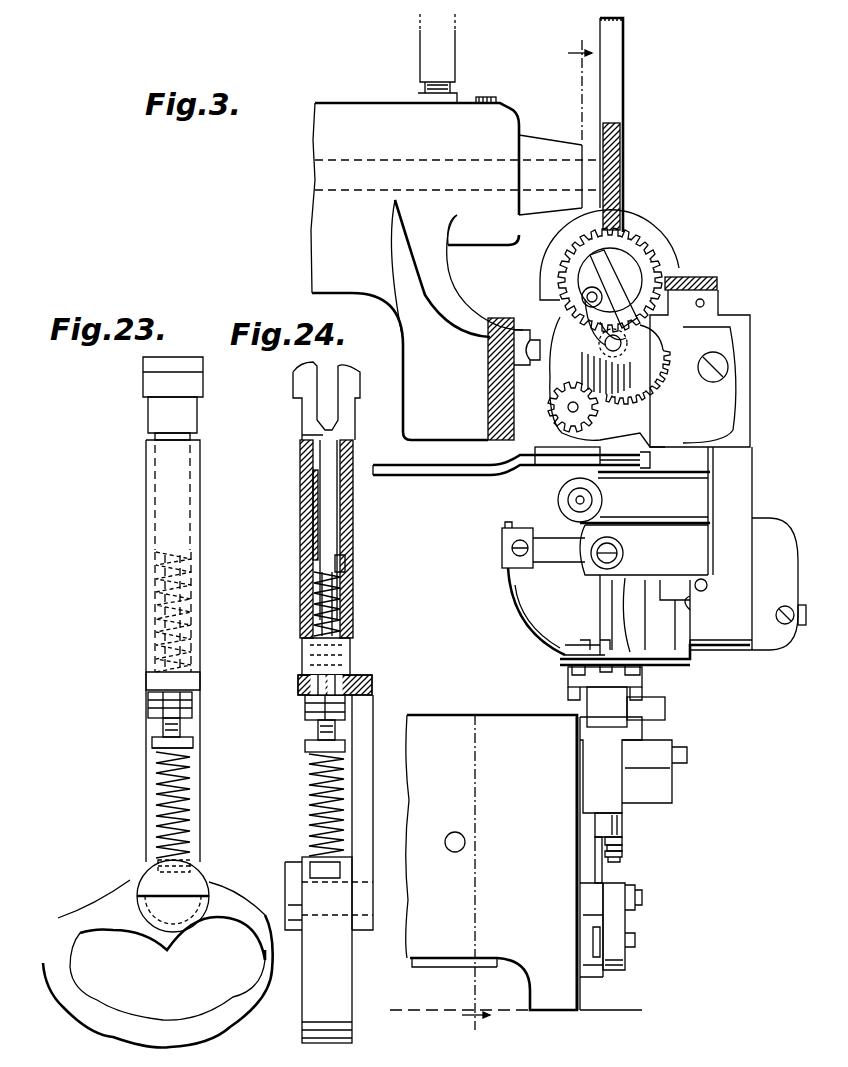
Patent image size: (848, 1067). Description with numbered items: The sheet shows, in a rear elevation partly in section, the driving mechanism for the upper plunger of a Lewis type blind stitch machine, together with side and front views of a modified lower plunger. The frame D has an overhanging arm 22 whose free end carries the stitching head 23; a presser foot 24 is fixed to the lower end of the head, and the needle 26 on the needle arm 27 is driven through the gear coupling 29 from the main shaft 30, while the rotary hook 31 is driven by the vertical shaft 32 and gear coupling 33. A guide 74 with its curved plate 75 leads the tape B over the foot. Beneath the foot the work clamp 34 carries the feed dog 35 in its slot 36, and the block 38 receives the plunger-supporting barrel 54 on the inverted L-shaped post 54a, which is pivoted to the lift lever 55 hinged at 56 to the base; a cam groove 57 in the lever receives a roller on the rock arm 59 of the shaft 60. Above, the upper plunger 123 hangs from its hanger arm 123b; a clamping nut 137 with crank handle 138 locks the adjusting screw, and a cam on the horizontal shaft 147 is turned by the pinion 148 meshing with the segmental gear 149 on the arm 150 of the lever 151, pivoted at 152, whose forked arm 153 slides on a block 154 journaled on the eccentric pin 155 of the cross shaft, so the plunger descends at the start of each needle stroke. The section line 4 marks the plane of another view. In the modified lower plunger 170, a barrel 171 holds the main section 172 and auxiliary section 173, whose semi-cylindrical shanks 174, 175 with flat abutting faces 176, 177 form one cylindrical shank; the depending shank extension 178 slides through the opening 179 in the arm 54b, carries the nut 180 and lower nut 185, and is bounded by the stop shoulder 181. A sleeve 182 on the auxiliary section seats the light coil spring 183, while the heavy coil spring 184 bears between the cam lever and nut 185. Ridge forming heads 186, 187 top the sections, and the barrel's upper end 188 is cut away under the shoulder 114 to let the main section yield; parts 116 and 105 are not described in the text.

In FIG. 3, the overhanging arm 22 is at (335, 106).
In FIG. 3, the frame D is at (400, 102).
In FIG. 3, the main shaft 30 is at (372, 190).
In FIG. 3, the section line 4 is at (527, 536).
In FIG. 3, the tape B is at (610, 92).
In FIG. 3, the gear coupling 29 is at (620, 134).
In FIG. 3, the block 154 is at (600, 255).
In FIG. 3, the arm 153 is at (615, 275).
In FIG. 3, the eccentric pin 155 is at (582, 297).
In FIG. 3, the lever 151 is at (630, 345).
In FIG. 3, the arm 150 is at (710, 356).
In FIG. 3, the pivot 152 is at (565, 357).
In FIG. 3, the pinion 148 is at (589, 407).
In FIG. 3, the segmental gear 149 is at (648, 400).
In FIG. 3, the horizontal shaft 147 is at (555, 449).
In FIG. 3, the crank handle 138 is at (445, 465).
In FIG. 3, the clamping nut 137 is at (602, 481).
In FIG. 3, the stitching head 23 is at (740, 488).
In FIG. 3, the needle arm 27 is at (525, 533).
In FIG. 3, the hanger arm 123b is at (628, 590).
In FIG. 3, the guide 74 is at (570, 590).
In FIG. 3, the plate 75 is at (585, 603).
In FIG. 3, the needle 26 is at (540, 590).
In FIG. 3, the rotary hook 31 is at (695, 593).
In FIG. 3, the upper plunger 123 is at (590, 640).
In FIG. 3, the presser foot 24 is at (690, 654).
In FIG. 3, the feed dog 35 is at (572, 670).
In FIG. 3, the slot 36 is at (640, 686).
In FIG. 3, the work clamp 34 is at (568, 680).
In FIG. 3, the block 38 is at (612, 803).
In FIG. 3, the plunger-supporting barrel 54 is at (625, 830).
In FIG. 3, the arm 54b is at (600, 838).
In FIG. 23, the arm 54b is at (150, 678).
In FIG. 24, the arm 54b is at (300, 683).
In FIG. 3, the nut 116 is at (607, 849).
In FIG. 3, the nut 105 is at (608, 860).
In FIG. 3, the post 54a is at (604, 871).
In FIG. 23, the post 54a is at (190, 798).
In FIG. 24, the post 54a is at (372, 720).
In FIG. 3, the pivot 56 is at (642, 898).
In FIG. 3, the lift lever 55 is at (625, 928).
In FIG. 23, the lift lever 55 is at (48, 917).
In FIG. 24, the lift lever 55 is at (329, 950).
In FIG. 3, the rock arm 59 is at (593, 932).
In FIG. 3, the shaft 60 is at (447, 966).
In FIG. 3, the gear coupling 33 is at (708, 280).
In FIG. 3, the vertical shaft 32 is at (720, 304).
In FIG. 23, the ridge forming head 187 is at (150, 412).
In FIG. 24, the ridge forming head 187 is at (302, 406).
In FIG. 23, the lower plunger 170 is at (172, 514).
In FIG. 24, the lower plunger 170 is at (342, 535).
In FIG. 23, the sleeve 182 is at (160, 556).
In FIG. 24, the sleeve 182 is at (352, 568).
In FIG. 23, the barrel 171 is at (146, 590).
In FIG. 24, the barrel 171 is at (352, 606).
In FIG. 23, the light coil spring 183 is at (155, 626).
In FIG. 24, the light coil spring 183 is at (318, 578).
In FIG. 23, the shank extension 178 is at (150, 656).
In FIG. 24, the shank extension 178 is at (318, 604).
In FIG. 23, the nut 180 is at (152, 710).
In FIG. 24, the nut 180 is at (307, 710).
In FIG. 23, the nut 185 is at (150, 750).
In FIG. 24, the nut 185 is at (305, 746).
In FIG. 23, the heavy coil spring 184 is at (155, 813).
In FIG. 24, the heavy coil spring 184 is at (312, 790).
In FIG. 23, the cam groove 57 is at (215, 1010).
In FIG. 24, the ridge forming head 186 is at (345, 423).
In FIG. 24, the shoulder 114 is at (345, 438).
In FIG. 24, the semi-cylindrical shank 175 is at (310, 453).
In FIG. 24, the upper end of barrel 188 is at (350, 460).
In FIG. 24, the auxiliary section 173 is at (318, 466).
In FIG. 24, the semi-cylindrical shank 174 is at (338, 482).
In FIG. 24, the flat abutting face 177 is at (318, 495).
In FIG. 24, the main section 172 is at (336, 504).
In FIG. 24, the flat abutting face 176 is at (318, 528).
In FIG. 24, the stop shoulder 181 is at (348, 545).
In FIG. 24, the opening 179 is at (360, 675).